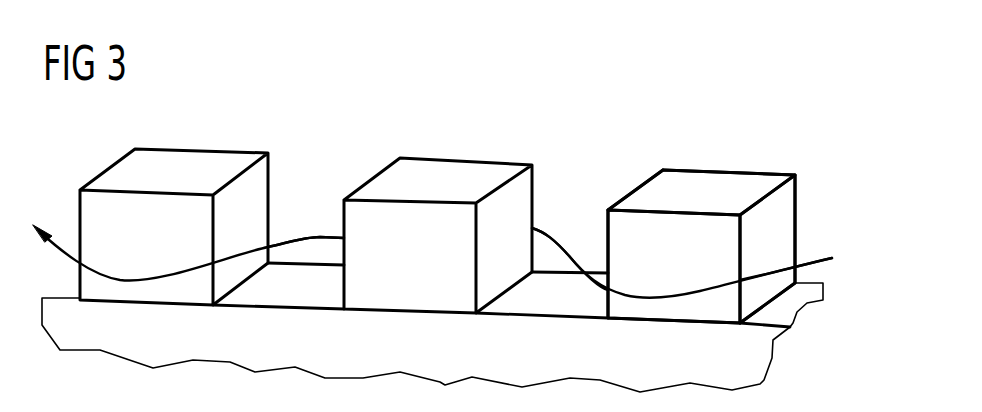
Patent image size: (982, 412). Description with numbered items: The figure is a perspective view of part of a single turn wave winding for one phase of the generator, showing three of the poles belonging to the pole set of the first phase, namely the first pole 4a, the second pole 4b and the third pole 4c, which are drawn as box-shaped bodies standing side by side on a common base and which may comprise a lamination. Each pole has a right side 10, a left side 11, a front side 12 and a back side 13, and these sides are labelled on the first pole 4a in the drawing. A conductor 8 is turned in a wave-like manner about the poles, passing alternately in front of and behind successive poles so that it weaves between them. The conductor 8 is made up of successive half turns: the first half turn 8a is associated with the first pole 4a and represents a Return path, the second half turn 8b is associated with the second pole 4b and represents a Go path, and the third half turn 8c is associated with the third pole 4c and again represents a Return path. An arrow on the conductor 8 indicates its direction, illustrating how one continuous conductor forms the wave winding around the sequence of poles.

The first pole 4a is at (700, 187).
The second pole 4b is at (438, 178).
The third pole 4c is at (173, 168).
The conductor 8 is at (692, 297).
The first half turn 8a is at (782, 267).
The second half turn 8b is at (557, 233).
The third half turn 8c is at (293, 237).
The right side 10 is at (780, 202).
The left side 11 is at (633, 188).
The front side 12 is at (747, 172).
The back side 13 is at (633, 252).